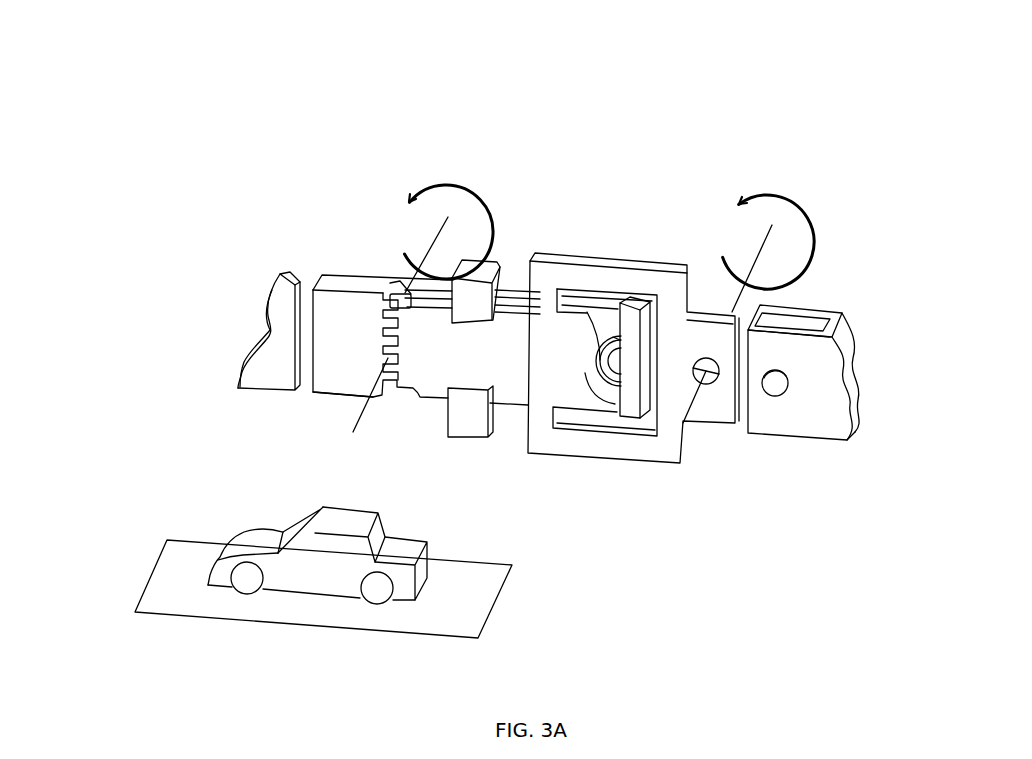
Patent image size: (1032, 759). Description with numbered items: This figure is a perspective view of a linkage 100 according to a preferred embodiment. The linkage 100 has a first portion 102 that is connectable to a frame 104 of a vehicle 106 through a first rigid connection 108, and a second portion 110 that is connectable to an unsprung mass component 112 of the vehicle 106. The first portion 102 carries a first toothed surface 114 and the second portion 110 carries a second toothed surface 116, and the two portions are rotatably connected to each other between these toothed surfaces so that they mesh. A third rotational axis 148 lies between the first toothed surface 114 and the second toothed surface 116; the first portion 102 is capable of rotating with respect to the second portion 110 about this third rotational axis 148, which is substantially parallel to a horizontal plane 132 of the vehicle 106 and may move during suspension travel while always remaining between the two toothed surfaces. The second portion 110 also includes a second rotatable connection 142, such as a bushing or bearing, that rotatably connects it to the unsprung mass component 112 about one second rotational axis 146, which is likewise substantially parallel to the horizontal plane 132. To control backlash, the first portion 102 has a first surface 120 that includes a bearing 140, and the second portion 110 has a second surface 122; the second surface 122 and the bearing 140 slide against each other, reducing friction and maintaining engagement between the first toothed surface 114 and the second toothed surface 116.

The linkage 100 is at (443, 128).
The first portion 102 is at (343, 307).
The frame 104 is at (263, 373).
The vehicle 106 is at (252, 543).
The first rigid connection 108 is at (312, 380).
The second portion 110 is at (653, 282).
The unsprung mass component 112 is at (818, 418).
The first toothed surface 114 is at (382, 300).
The second toothed surface 116 is at (400, 280).
The first surface 120 is at (618, 400).
The second surface 122 is at (587, 310).
The horizontal plane 132 is at (167, 582).
The bearing 140 is at (613, 337).
The second rotatable connection 142 is at (706, 375).
The second rotational axis 146 is at (758, 258).
The third rotational axis 148 is at (442, 230).